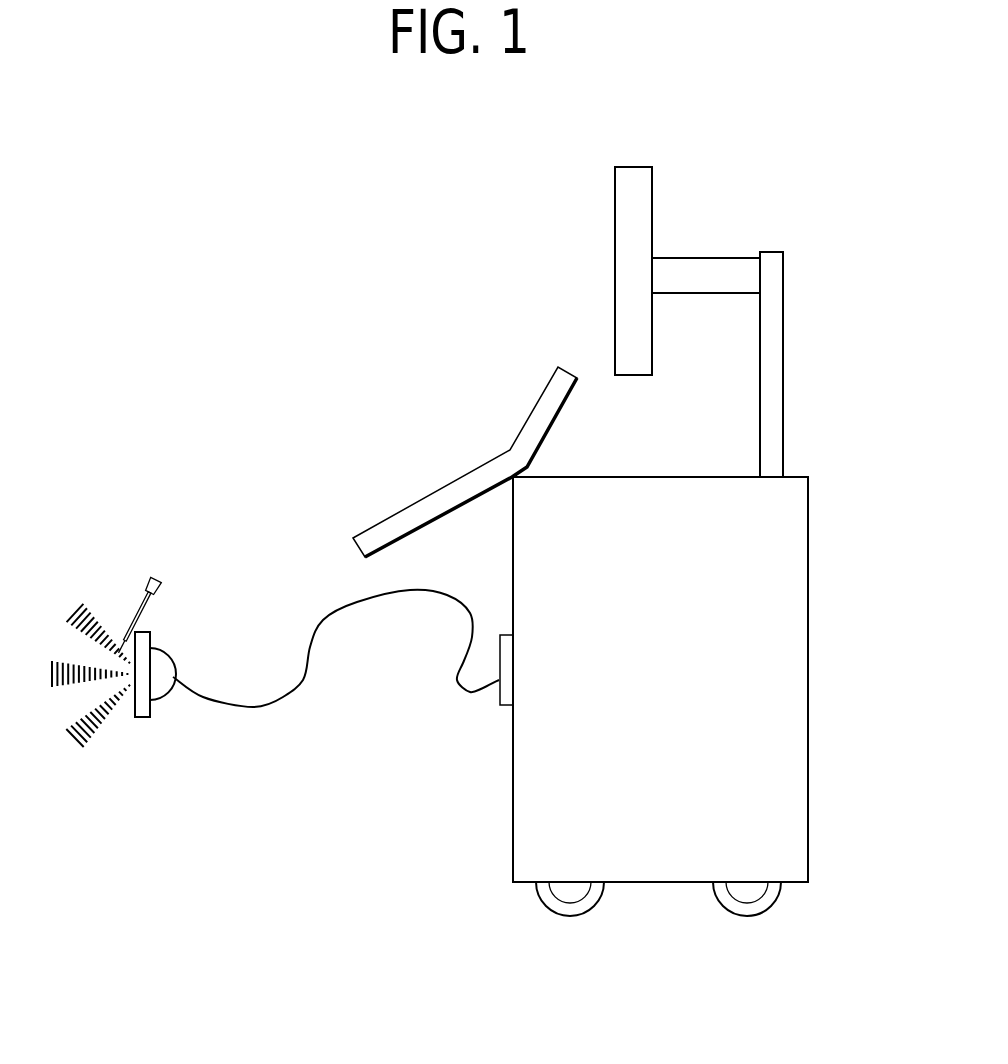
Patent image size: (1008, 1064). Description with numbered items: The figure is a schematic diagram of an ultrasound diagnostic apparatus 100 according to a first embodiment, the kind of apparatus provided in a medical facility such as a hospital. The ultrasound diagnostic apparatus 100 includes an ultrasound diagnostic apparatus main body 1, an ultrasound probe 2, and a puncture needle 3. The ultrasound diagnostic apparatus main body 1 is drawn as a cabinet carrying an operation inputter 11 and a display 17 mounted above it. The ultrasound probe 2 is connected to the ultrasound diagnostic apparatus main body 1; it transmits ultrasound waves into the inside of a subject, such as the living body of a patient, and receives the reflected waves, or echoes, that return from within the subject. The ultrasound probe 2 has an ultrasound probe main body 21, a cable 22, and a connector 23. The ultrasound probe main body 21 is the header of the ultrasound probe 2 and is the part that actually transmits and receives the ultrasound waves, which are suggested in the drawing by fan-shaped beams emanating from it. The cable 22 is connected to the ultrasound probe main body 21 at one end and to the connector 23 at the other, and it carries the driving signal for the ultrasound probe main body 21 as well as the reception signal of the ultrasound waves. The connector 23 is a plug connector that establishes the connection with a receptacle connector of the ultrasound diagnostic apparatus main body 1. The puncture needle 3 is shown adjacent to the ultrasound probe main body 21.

The ultrasound diagnostic apparatus 100 is at (240, 215).
The ultrasound diagnostic apparatus main body 1 is at (808, 680).
The ultrasound probe 2 is at (213, 778).
The puncture needle 3 is at (157, 580).
The operation inputter 11 is at (532, 412).
The display 17 is at (615, 232).
The ultrasound probe main body 21 is at (150, 637).
The cable 22 is at (307, 677).
The connector 23 is at (503, 705).